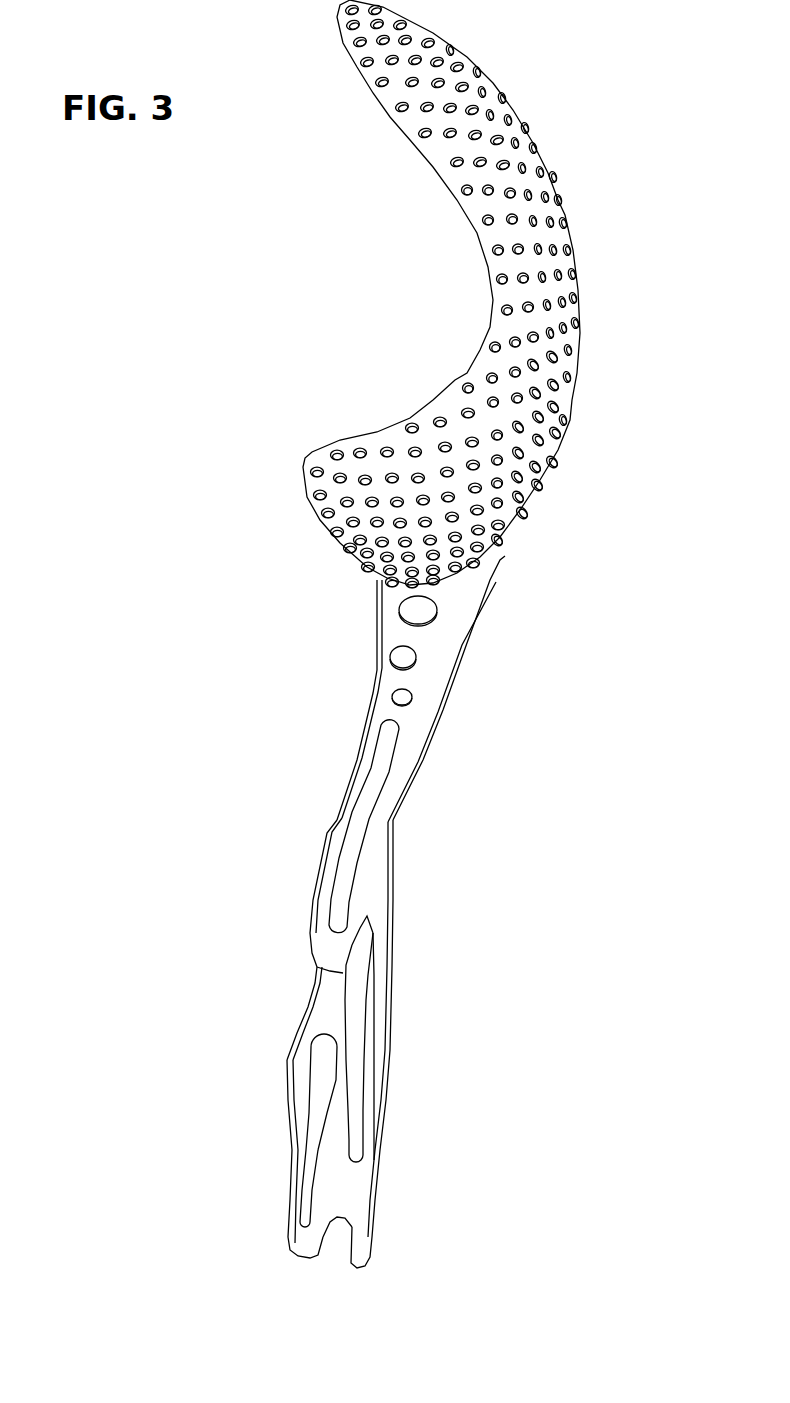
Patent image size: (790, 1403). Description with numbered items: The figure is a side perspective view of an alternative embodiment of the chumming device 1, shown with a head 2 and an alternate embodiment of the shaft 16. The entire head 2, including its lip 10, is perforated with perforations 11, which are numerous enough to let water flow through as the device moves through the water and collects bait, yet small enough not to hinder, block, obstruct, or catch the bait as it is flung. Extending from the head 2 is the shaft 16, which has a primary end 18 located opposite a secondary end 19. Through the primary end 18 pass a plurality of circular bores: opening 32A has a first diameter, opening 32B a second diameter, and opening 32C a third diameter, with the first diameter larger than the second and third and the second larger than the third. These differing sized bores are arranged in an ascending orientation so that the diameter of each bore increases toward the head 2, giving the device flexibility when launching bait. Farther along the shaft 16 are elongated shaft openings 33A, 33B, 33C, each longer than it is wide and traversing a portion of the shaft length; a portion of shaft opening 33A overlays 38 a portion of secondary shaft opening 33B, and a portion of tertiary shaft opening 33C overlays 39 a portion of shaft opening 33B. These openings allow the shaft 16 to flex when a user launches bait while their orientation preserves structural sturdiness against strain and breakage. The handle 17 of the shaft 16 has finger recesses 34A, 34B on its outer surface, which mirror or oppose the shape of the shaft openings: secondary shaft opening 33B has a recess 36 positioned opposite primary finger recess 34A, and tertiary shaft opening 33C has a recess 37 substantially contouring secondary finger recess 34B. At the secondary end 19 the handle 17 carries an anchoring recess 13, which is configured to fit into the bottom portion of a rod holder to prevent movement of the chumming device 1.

The chumming device 1 is at (622, 158).
The head 2 is at (578, 290).
The lip 10 is at (312, 503).
The perforations 11 is at (538, 337).
The anchoring recess 13 is at (335, 1243).
The shaft 16 is at (393, 853).
The handle 17 is at (402, 1126).
The primary end 18 is at (455, 593).
The secondary end 19 is at (375, 1205).
The opening 32A is at (417, 612).
The opening 32B is at (403, 657).
The opening 32C is at (402, 697).
The shaft opening 33A is at (357, 868).
The secondary shaft opening 33B is at (360, 973).
The tertiary shaft opening 33C is at (308, 1205).
The primary finger recess 34A is at (313, 987).
The secondary finger recess 34B is at (300, 1150).
The recess 36 is at (313, 963).
The recess 37 is at (317, 1130).
The overlay 38 is at (368, 923).
The overlay 39 is at (338, 1138).